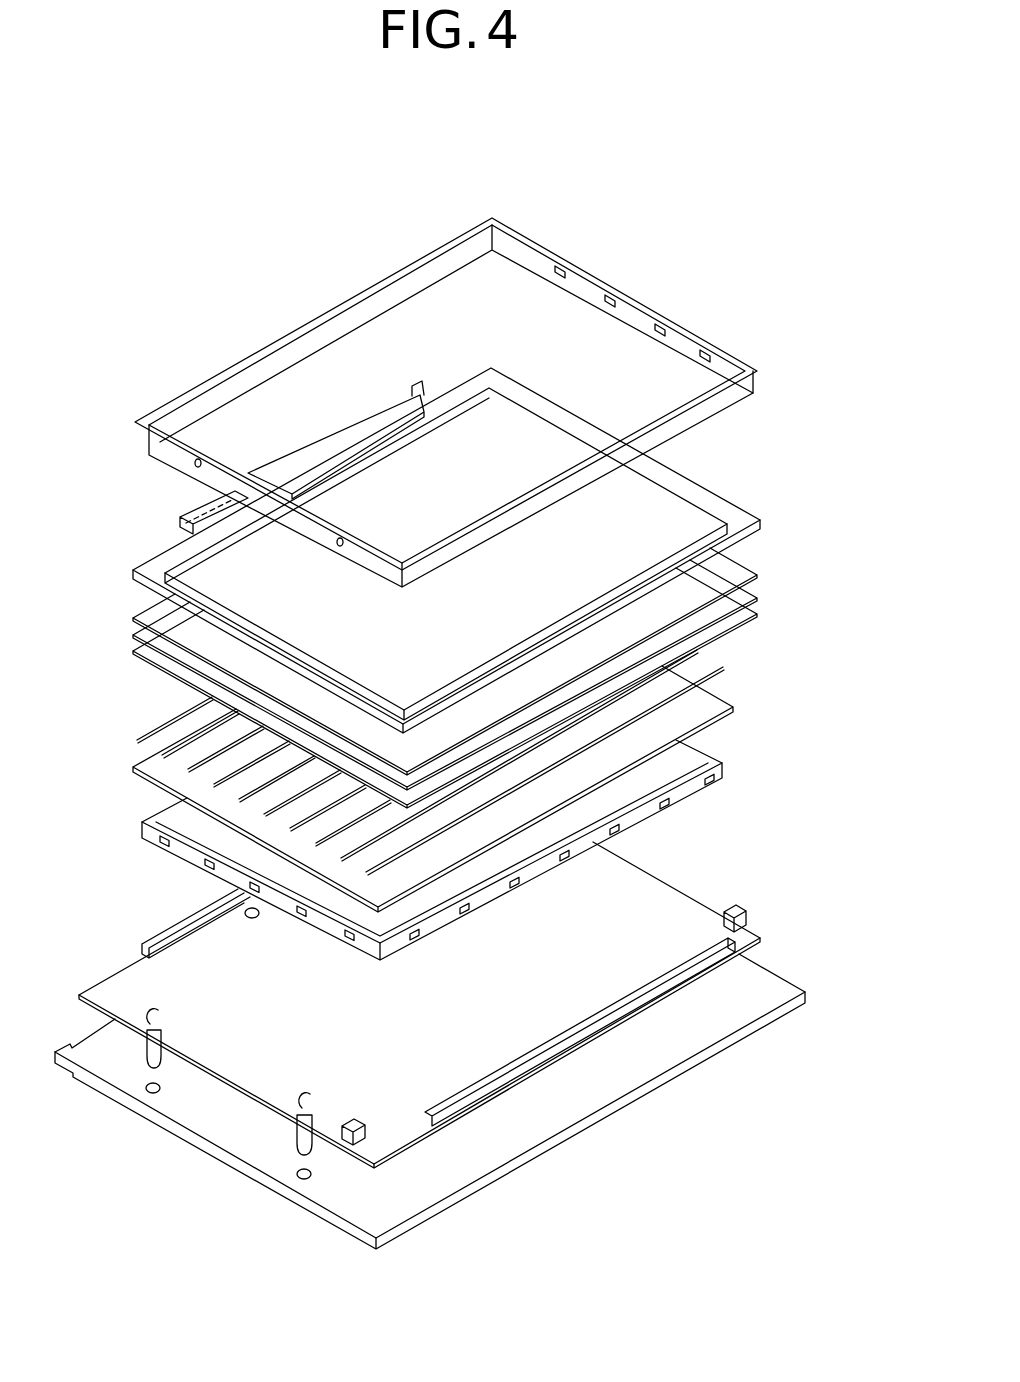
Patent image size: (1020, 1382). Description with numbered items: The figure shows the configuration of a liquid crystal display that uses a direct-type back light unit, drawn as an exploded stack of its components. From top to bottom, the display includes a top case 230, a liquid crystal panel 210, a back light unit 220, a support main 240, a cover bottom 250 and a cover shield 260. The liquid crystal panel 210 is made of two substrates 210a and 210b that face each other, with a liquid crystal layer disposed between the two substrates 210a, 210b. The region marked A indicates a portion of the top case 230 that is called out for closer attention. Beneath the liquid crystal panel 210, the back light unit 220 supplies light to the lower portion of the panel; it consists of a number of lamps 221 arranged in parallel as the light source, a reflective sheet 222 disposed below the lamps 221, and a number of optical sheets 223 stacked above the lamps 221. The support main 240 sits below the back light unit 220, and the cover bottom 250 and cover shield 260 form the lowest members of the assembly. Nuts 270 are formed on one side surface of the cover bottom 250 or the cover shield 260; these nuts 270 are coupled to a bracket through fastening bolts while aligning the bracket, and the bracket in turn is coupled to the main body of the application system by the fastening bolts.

The top case 230 is at (740, 355).
The region A is at (352, 325).
The liquid crystal panel 210 is at (519, 550).
The substrate 210a is at (709, 520).
The substrate 210b is at (757, 519).
The back light unit 220 is at (524, 730).
The optical sheets 223 is at (758, 596).
The lamps 221 is at (720, 664).
The reflective sheet 222 is at (713, 698).
The support main 240 is at (727, 762).
The cover bottom 250 is at (760, 940).
The cover shield 260 is at (783, 986).
The nuts 270 is at (149, 1066).